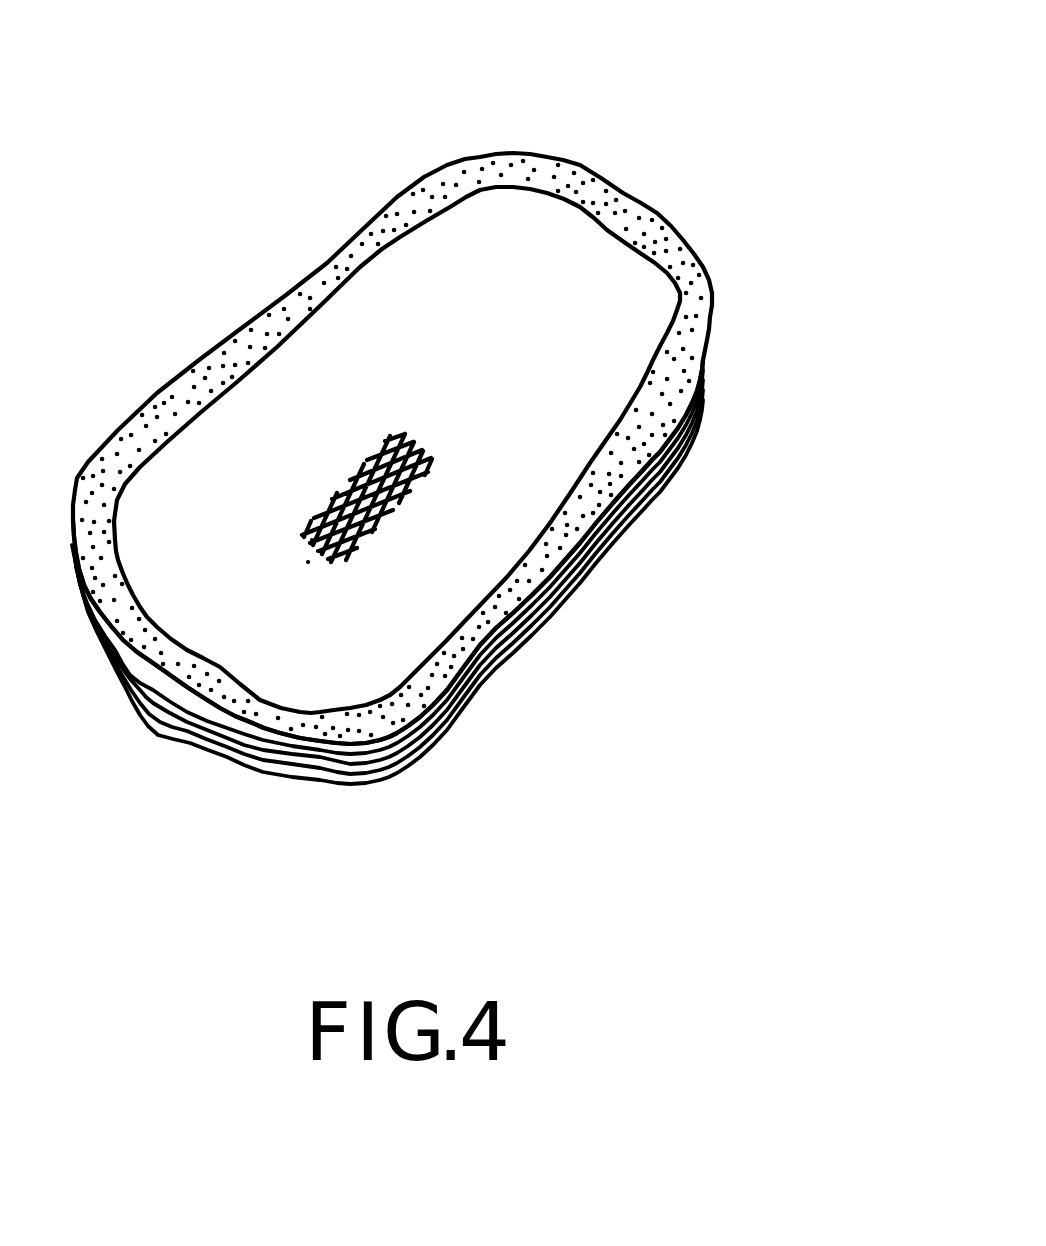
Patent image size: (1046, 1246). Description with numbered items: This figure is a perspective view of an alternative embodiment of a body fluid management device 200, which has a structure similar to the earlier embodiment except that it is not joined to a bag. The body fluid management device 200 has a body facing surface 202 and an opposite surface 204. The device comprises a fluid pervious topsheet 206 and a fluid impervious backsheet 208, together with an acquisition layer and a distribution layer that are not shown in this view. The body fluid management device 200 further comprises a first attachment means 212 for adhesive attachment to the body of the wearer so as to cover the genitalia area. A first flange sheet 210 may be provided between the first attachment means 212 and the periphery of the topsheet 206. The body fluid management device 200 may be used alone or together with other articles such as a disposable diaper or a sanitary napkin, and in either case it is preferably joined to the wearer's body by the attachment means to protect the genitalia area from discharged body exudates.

The body fluid management device 200 is at (185, 273).
The body facing surface 202 is at (483, 215).
The opposite surface 204 is at (428, 785).
The fluid pervious topsheet 206 is at (607, 283).
The fluid impervious backsheet 208 is at (682, 441).
The first flange sheet 210 is at (705, 380).
The first attachment means 212 is at (570, 512).